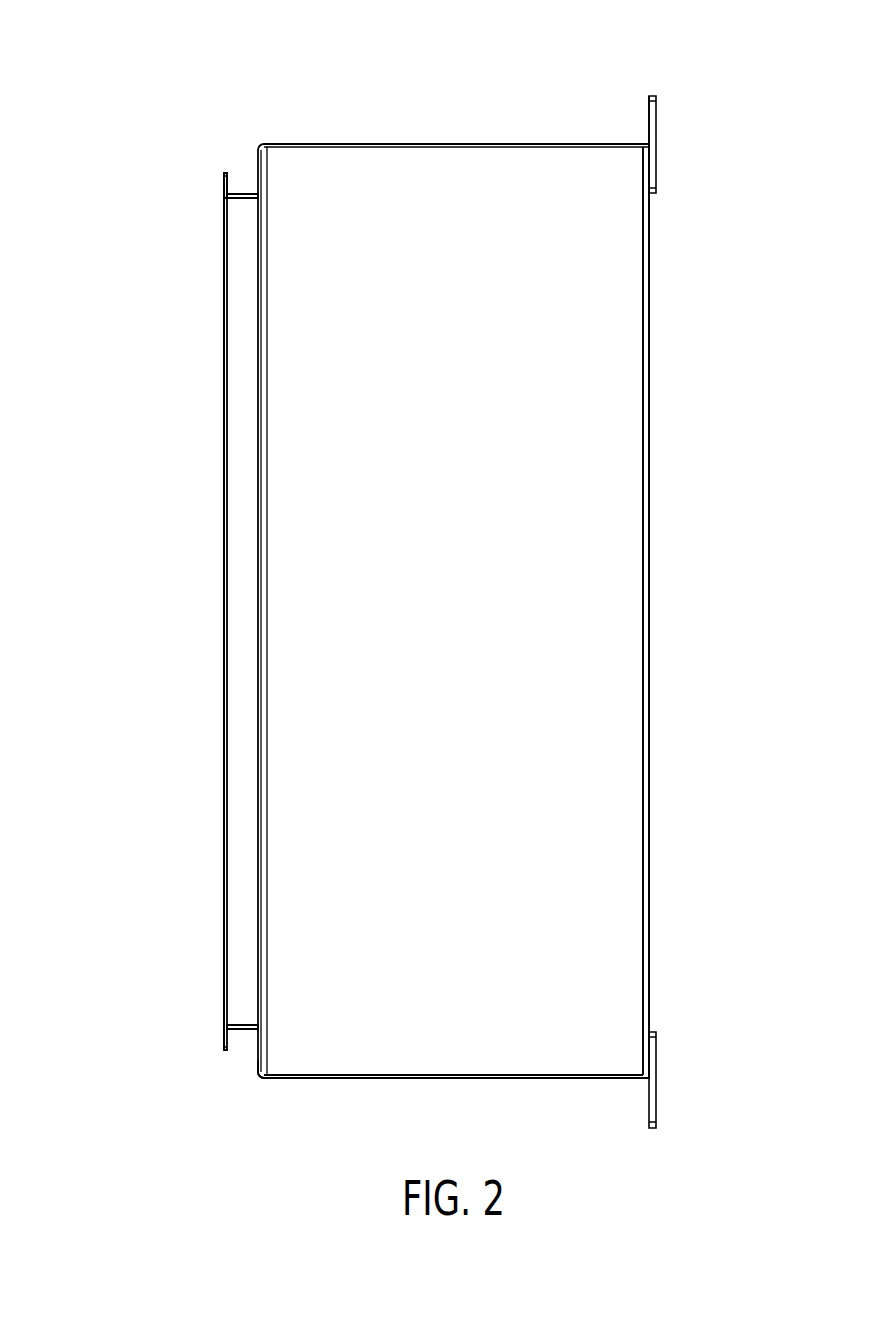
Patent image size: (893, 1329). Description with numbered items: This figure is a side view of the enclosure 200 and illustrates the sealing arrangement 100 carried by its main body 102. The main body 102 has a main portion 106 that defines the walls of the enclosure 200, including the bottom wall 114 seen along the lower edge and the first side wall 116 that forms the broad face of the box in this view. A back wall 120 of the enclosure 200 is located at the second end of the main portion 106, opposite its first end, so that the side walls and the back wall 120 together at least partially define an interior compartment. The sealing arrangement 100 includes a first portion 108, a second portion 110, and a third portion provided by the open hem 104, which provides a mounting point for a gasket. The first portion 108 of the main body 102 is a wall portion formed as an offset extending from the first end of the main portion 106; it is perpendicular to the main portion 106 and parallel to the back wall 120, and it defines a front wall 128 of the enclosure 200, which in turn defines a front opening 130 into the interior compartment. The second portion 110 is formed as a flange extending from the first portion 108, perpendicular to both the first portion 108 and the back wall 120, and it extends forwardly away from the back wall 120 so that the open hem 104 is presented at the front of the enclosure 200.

The sealing arrangement 100 is at (88, 105).
The main body 102 is at (646, 61).
The open hem 104 is at (222, 817).
The main portion 106 is at (646, 119).
The first portion 108 is at (215, 143).
The second portion 110 is at (265, 118).
The bottom wall 114 is at (513, 1078).
The first side wall 116 is at (463, 987).
The back wall 120 is at (650, 612).
The front wall 128 is at (260, 1060).
The front opening 130 is at (210, 512).
The enclosure 200 is at (732, 393).